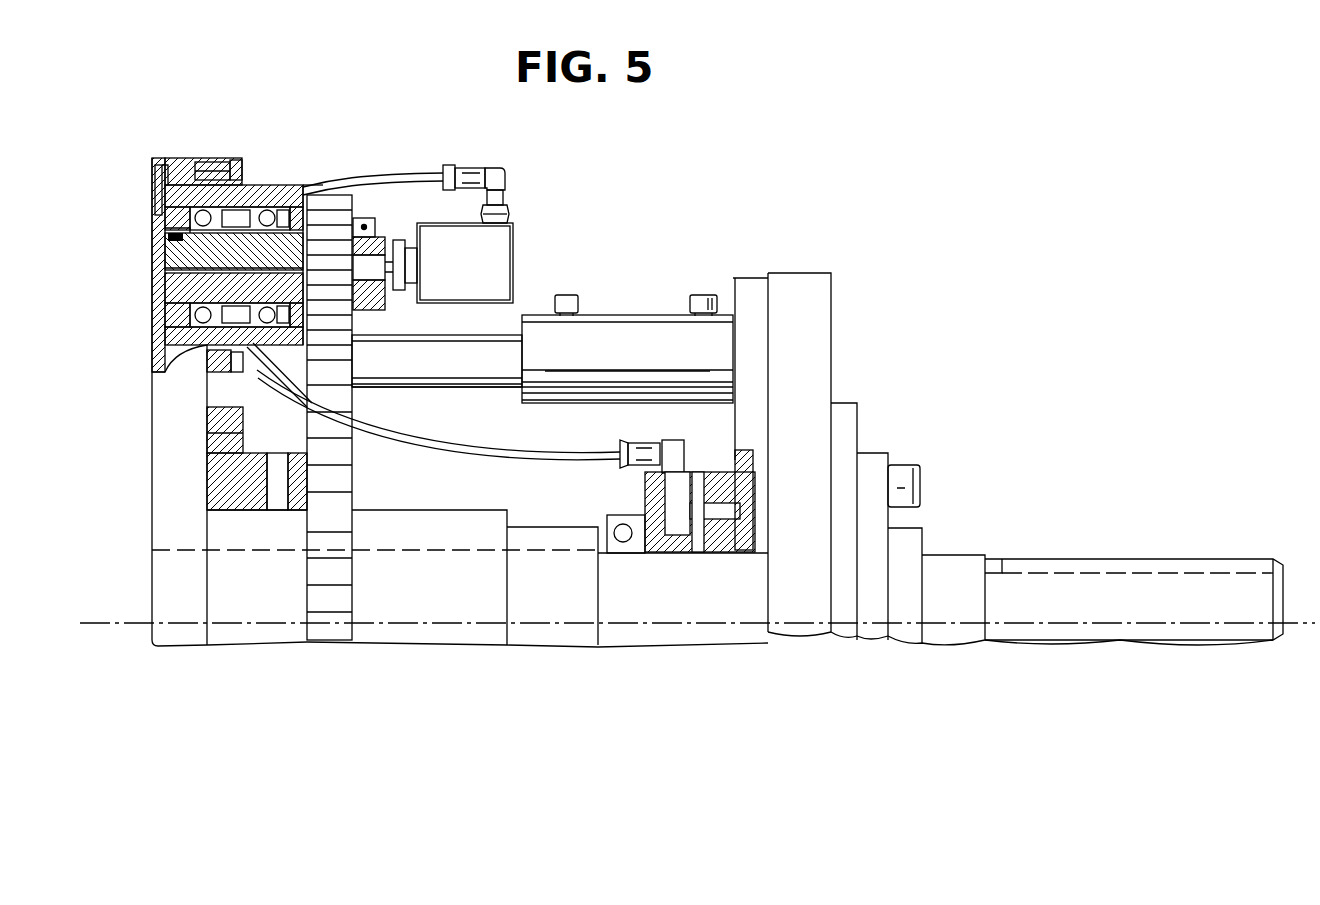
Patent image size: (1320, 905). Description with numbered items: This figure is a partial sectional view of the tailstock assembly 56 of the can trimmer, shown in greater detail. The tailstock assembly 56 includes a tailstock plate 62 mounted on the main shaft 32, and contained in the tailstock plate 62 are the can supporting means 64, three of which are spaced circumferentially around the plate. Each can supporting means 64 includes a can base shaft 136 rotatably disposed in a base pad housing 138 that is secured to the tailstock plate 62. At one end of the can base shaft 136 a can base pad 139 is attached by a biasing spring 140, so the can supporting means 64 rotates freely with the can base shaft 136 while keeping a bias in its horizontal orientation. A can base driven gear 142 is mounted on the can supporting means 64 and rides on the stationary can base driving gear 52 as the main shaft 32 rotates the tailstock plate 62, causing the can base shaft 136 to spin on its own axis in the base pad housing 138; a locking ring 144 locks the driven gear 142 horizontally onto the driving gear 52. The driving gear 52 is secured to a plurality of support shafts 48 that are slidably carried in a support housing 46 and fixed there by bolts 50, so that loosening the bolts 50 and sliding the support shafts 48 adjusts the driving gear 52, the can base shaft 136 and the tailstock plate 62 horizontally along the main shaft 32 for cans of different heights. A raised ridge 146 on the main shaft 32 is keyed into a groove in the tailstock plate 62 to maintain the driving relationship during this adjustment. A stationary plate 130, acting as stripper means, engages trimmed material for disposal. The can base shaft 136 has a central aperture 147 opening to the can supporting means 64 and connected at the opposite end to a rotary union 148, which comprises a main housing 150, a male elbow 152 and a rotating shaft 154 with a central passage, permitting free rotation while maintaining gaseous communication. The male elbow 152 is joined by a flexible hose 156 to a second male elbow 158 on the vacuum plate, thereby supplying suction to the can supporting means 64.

The main shaft 32 is at (1055, 567).
The support housing 46 is at (652, 330).
The support shafts 48 is at (460, 393).
The bolts 50 is at (568, 302).
The can base driving gear 52 is at (343, 603).
The tailstock assembly 56 is at (334, 182).
The tailstock plate 62 is at (195, 640).
The can supporting means 64 is at (276, 180).
The stationary plate 130 is at (650, 498).
The can base shaft 136 is at (378, 288).
The base pad housing 138 is at (212, 162).
The can base pad 139 is at (152, 215).
The spring 140 is at (168, 238).
The can base driven gear 142 is at (358, 200).
The locking ring 144 is at (380, 320).
The raised ridge 146 is at (517, 500).
The central aperture 147 is at (165, 280).
The rotary union 148 is at (515, 237).
The main housing 150 is at (493, 275).
The male elbow 152 is at (498, 180).
The rotating shaft 154 is at (404, 245).
The flexible hose 156 is at (428, 170).
The second male elbow 158 is at (697, 437).